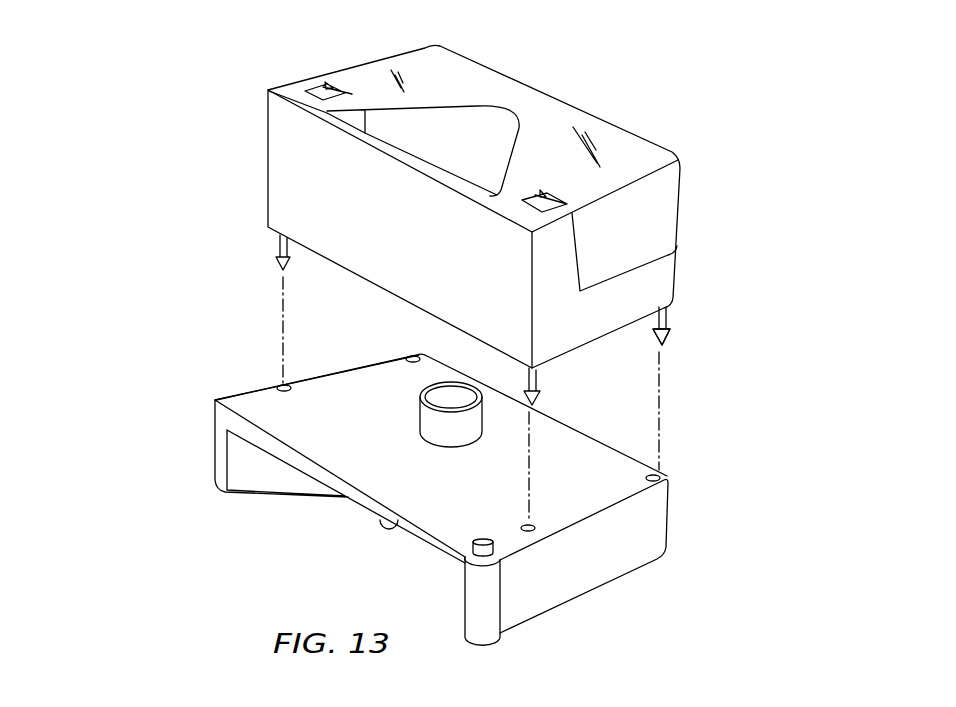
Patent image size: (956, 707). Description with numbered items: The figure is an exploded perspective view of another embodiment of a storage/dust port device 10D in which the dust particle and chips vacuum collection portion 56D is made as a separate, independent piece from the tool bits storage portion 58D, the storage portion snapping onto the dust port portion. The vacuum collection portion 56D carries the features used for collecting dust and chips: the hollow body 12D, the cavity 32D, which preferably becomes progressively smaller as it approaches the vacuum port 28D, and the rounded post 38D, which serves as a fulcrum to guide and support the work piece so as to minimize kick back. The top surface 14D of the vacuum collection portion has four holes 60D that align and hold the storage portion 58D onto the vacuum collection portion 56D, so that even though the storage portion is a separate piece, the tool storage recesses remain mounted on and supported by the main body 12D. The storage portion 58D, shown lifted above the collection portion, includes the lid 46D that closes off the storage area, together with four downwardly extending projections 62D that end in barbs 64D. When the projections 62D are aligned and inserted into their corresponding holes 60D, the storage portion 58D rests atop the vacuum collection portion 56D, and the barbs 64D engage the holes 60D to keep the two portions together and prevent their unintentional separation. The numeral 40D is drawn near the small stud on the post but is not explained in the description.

The storage/dust port device 10D is at (181, 176).
The tool bits storage portion 58D is at (690, 230).
The lid 46D is at (567, 172).
The downwardly extending projections 62D is at (668, 316).
The barbs 64D is at (668, 339).
The dust particle and chips vacuum collection portion 56D is at (498, 495).
The hollow body 12D is at (608, 583).
The top surface 14D is at (317, 402).
The holes 60D is at (411, 355).
The vacuum port 28D is at (422, 410).
The cavity 32D is at (383, 512).
The rounded post 38D is at (490, 607).
The stud 40D is at (468, 556).